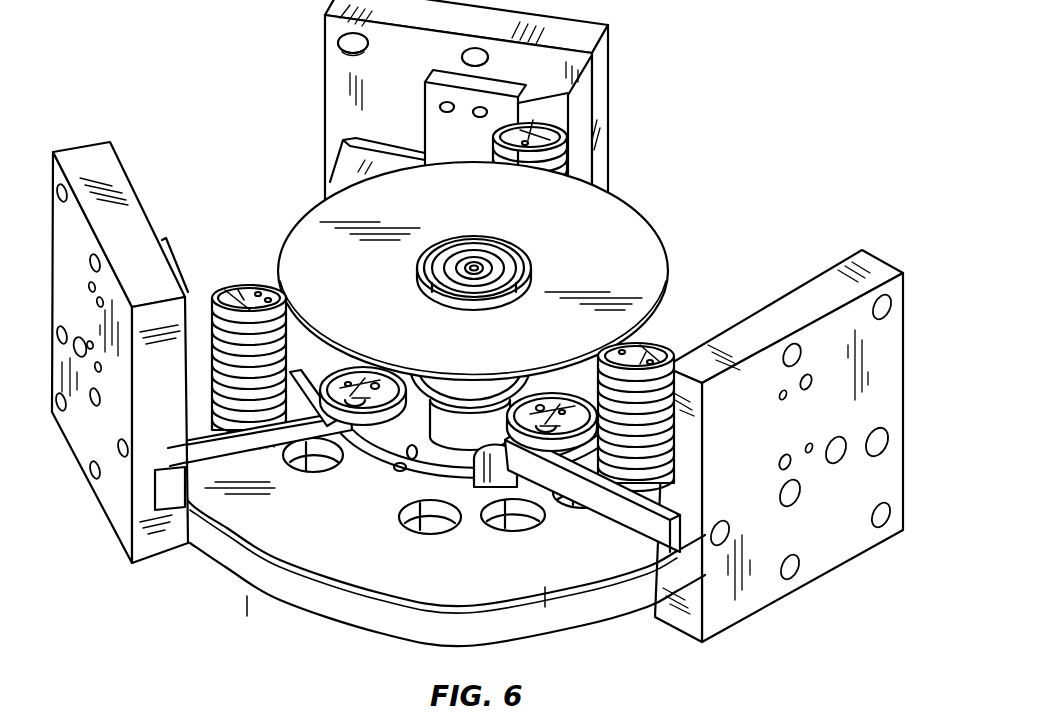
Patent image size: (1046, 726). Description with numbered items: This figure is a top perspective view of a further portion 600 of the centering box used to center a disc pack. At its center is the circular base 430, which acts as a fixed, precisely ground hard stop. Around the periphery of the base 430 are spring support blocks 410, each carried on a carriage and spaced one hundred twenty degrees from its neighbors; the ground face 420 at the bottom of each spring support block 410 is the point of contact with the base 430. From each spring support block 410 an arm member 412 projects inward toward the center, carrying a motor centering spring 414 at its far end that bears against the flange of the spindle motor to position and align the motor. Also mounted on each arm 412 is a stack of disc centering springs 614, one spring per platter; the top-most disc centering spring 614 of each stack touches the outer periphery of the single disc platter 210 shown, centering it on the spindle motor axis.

The portion of the centering box 600 is at (724, 179).
The disc platter 210 is at (608, 212).
The spring support block 410 is at (105, 158).
The arm member 412 is at (310, 468).
The motor centering spring 414 is at (378, 390).
The face 420 is at (167, 547).
The circular base 430 is at (235, 562).
The disc centering spring 614 is at (259, 287).